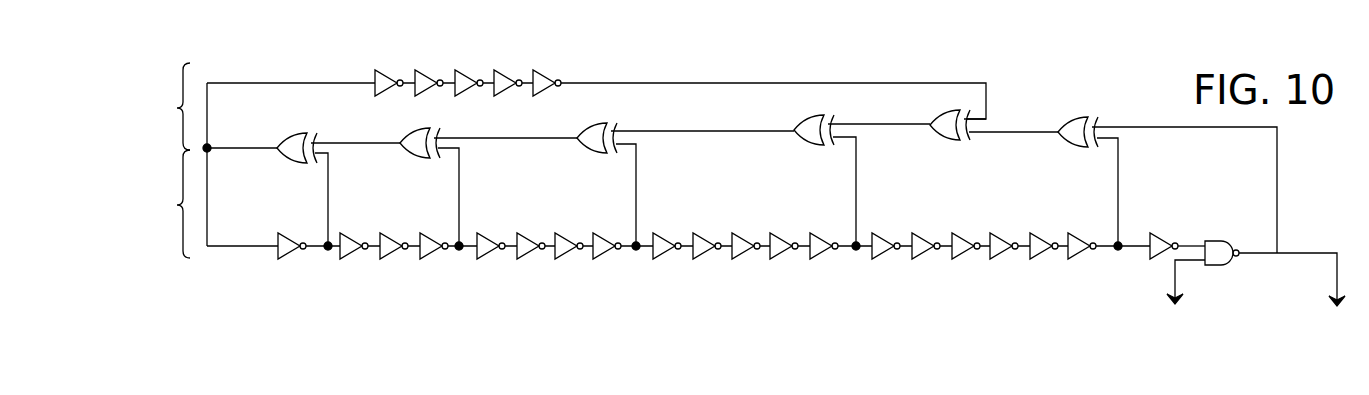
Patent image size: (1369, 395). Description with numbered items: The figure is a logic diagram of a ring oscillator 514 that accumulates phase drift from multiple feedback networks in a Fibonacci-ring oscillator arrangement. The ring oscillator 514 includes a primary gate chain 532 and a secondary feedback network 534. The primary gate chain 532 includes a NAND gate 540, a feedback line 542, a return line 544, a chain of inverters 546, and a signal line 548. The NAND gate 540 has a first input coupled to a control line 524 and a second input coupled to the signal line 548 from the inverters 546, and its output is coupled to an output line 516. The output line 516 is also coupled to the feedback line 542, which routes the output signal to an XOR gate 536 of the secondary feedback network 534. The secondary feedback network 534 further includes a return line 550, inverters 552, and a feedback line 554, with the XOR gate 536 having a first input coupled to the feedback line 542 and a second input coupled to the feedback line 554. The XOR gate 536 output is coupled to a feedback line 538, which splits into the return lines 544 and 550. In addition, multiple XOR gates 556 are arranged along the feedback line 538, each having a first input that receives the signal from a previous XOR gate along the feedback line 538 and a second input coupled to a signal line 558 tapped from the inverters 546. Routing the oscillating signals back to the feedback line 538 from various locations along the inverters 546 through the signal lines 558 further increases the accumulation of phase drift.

The ring oscillator 514 is at (228, 32).
The output line 516 is at (1305, 253).
The control line 524 is at (1175, 277).
The primary gate chain 532 is at (164, 204).
The secondary feedback network 534 is at (164, 106).
The XOR gate 536 is at (947, 140).
The feedback line 538 is at (673, 131).
The NAND gate 540 is at (1215, 266).
The feedback line 542 is at (1163, 128).
The return line 544 is at (213, 246).
The inverters 546 is at (1100, 262).
The signal line 548 is at (1190, 246).
The return line 550 is at (239, 83).
The inverters 552 is at (565, 70).
The feedback line 554 is at (776, 83).
The XOR gates 556 is at (298, 133).
The signal lines 558 is at (328, 176).